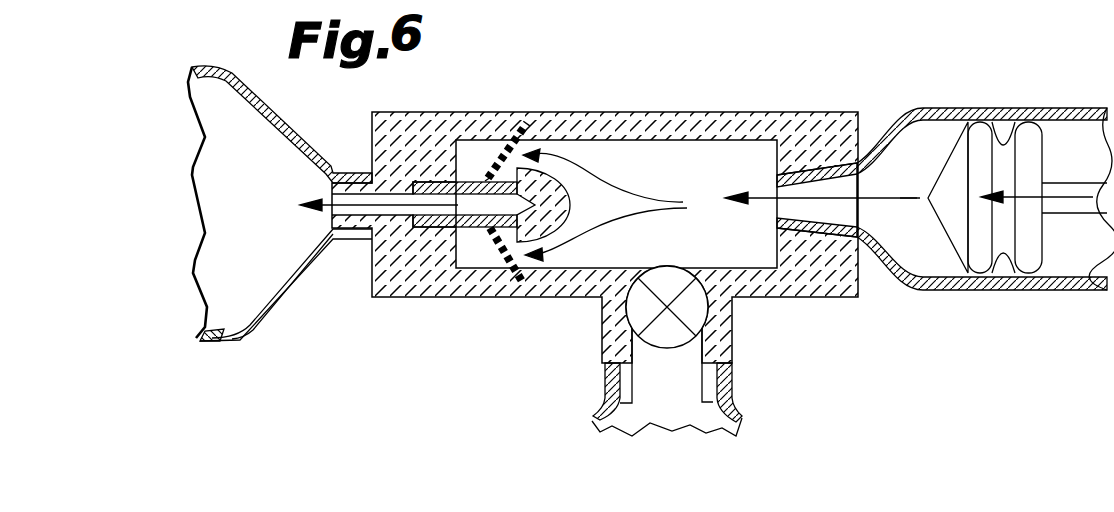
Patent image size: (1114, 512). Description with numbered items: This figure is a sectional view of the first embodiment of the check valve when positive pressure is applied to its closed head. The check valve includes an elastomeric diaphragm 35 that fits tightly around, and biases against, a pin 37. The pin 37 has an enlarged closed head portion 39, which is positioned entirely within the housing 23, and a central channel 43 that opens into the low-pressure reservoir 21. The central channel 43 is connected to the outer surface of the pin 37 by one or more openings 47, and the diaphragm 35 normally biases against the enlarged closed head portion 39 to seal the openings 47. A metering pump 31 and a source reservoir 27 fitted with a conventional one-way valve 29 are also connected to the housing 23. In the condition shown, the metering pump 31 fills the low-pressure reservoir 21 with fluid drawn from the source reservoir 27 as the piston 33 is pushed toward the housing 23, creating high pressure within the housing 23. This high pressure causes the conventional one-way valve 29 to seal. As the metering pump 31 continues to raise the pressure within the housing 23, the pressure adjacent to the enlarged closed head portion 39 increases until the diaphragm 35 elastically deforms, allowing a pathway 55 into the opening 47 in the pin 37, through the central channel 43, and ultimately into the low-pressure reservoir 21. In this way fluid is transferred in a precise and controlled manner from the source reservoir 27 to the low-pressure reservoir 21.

The low-pressure reservoir 21 is at (262, 218).
The housing 23 is at (723, 111).
The source reservoir 27 is at (683, 413).
The conventional one-way valve 29 is at (712, 317).
The metering pump 31 is at (987, 108).
The piston 33 is at (1003, 257).
The elastomeric diaphragm 35 is at (526, 124).
The pin 37 is at (462, 219).
The enlarged closed head portion 39 is at (571, 198).
The central channel 43 is at (477, 200).
The openings 47 is at (532, 224).
The pathway 55 is at (491, 176).